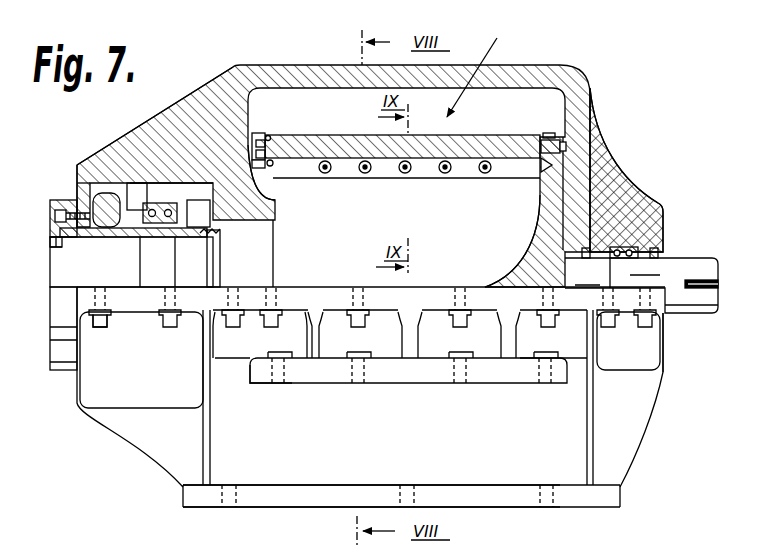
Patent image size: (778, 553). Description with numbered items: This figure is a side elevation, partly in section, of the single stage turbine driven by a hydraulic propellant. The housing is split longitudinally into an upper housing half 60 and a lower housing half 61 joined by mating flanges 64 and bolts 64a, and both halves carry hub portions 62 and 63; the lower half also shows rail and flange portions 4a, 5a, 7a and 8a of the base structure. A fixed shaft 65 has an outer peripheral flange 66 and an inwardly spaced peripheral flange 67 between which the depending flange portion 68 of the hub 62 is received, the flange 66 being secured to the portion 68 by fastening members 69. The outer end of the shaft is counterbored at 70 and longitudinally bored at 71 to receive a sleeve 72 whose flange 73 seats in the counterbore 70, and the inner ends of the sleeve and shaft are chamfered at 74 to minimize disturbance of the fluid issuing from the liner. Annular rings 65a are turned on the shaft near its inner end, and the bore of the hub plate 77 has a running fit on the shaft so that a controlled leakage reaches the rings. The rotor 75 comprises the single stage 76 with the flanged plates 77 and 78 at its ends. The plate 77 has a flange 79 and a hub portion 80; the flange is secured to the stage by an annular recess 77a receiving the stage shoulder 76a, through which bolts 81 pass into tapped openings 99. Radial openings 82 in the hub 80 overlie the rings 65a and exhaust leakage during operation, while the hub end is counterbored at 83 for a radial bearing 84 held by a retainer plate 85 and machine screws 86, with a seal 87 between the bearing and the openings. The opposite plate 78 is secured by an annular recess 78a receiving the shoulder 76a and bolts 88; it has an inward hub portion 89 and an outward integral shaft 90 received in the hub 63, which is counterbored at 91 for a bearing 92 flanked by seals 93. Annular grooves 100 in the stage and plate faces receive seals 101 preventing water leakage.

The lower rail 4a is at (320, 375).
The rail end 5a is at (270, 385).
The bottom flange 7a is at (335, 495).
The bottom flange end 8a is at (222, 505).
The upper housing half 60 is at (543, 65).
The lower housing half 61 is at (405, 426).
The hub portion 62 is at (80, 163).
The hub portion 63 is at (640, 200).
The mating flanges 64 is at (163, 328).
The bolts 64a is at (108, 328).
The fixed shaft 65 is at (112, 250).
The annular rings 65a is at (212, 236).
The outer peripheral flange 66 is at (63, 205).
The inwardly spaced peripheral flange 67 is at (116, 200).
The depending flange portion 68 is at (78, 182).
The fastening members 69 is at (55, 216).
The counterbore 70 is at (52, 242).
The longitudinal bore 71 is at (183, 262).
The sleeve 72 is at (148, 250).
The flange 73 is at (58, 247).
The chamfer 74 is at (212, 246).
The rotor 75 is at (483, 68).
The single stage 76 is at (345, 135).
The stage shoulder 76a is at (280, 168).
The hub plate 77 is at (257, 133).
The annular recess 77a is at (265, 170).
The end hub plate 78 is at (552, 134).
The annular recess 78a is at (548, 172).
The flange 79 is at (262, 140).
The hub portion 80 is at (195, 183).
The bolts 81 is at (246, 148).
The radial openings 82 is at (268, 228).
The counterbore 83 is at (150, 195).
The radial bearing 84 is at (165, 195).
The retainer plate 85 is at (130, 190).
The machine screws 86 is at (113, 185).
The seal 87 is at (212, 268).
The bolts 88 is at (560, 150).
The hub portion 89 is at (512, 268).
The integral shaft 90 is at (705, 258).
The counterbore 91 is at (618, 247).
The bearing 92 is at (636, 250).
The seals 93 is at (590, 245).
The tapped openings 99 is at (268, 142).
The annular grooves 100 is at (270, 150).
The seals 101 is at (275, 166).